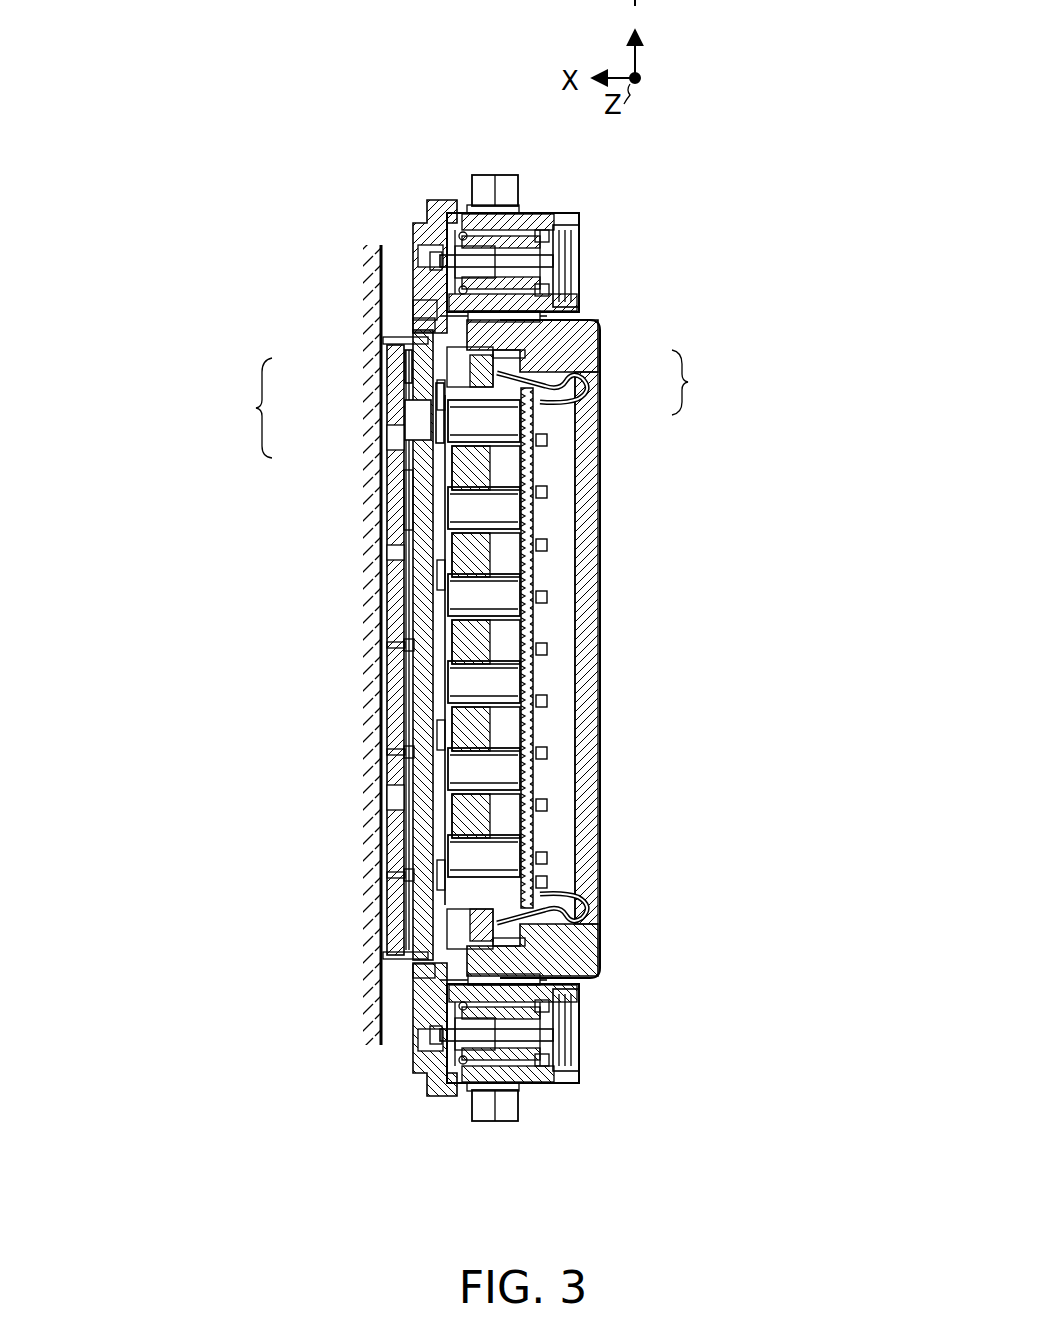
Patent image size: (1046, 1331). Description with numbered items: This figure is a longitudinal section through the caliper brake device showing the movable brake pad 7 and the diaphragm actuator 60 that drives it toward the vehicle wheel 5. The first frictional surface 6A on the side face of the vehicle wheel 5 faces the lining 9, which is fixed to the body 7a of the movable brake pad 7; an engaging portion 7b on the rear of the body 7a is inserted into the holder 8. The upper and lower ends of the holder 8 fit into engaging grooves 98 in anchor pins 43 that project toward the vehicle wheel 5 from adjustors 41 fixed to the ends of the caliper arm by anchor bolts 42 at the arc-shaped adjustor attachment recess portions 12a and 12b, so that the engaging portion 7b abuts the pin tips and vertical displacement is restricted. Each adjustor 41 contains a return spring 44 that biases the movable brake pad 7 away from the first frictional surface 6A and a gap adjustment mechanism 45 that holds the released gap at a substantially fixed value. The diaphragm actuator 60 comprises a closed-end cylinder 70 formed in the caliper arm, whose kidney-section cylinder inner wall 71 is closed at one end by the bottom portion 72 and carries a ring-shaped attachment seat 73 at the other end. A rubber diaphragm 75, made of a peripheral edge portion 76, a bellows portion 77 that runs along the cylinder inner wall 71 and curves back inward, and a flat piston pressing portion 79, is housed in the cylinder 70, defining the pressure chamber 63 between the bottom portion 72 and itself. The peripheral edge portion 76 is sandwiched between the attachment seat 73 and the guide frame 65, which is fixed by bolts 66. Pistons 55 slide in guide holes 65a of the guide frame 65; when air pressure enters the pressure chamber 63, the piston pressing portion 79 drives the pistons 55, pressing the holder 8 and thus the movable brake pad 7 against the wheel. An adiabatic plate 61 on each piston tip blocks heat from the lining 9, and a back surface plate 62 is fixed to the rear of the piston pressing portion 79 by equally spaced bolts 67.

The vehicle wheel 5 is at (229, 656).
The first frictional surface 6A is at (386, 995).
The movable brake pad 7 is at (378, 699).
The body 7a is at (396, 486).
The engaging portion 7b is at (415, 338).
The holder 8 is at (406, 803).
The lining 9 is at (396, 566).
The adjustor attachment recess portion 12a is at (510, 328).
The adjustor attachment recess portion 12b is at (520, 983).
The adjustor 41 is at (548, 214).
The anchor bolt 42 is at (498, 188).
The anchor pin 43 is at (420, 230).
The return spring 44 is at (548, 293).
The gap adjustment mechanism 45 is at (550, 243).
The piston 55 is at (400, 883).
The diaphragm actuator 60 is at (558, 885).
The adiabatic plate 61 is at (425, 605).
The back surface plate 62 is at (545, 773).
The pressure chamber 63 is at (565, 843).
The guide frame 65 is at (490, 738).
The guide hole 65a is at (530, 678).
The bolt 66 is at (420, 346).
The bolt 67 is at (545, 803).
The closed-end cylinder 70 is at (701, 382).
The cylinder inner wall 71 is at (560, 395).
The bottom portion 72 is at (570, 416).
The ring-shaped attachment seat 73 is at (560, 343).
The diaphragm 75 is at (247, 408).
The peripheral edge portion 76 is at (405, 368).
The bellows portion 77 is at (480, 425).
The piston pressing portion 79 is at (420, 465).
The engaging groove 98 is at (430, 303).